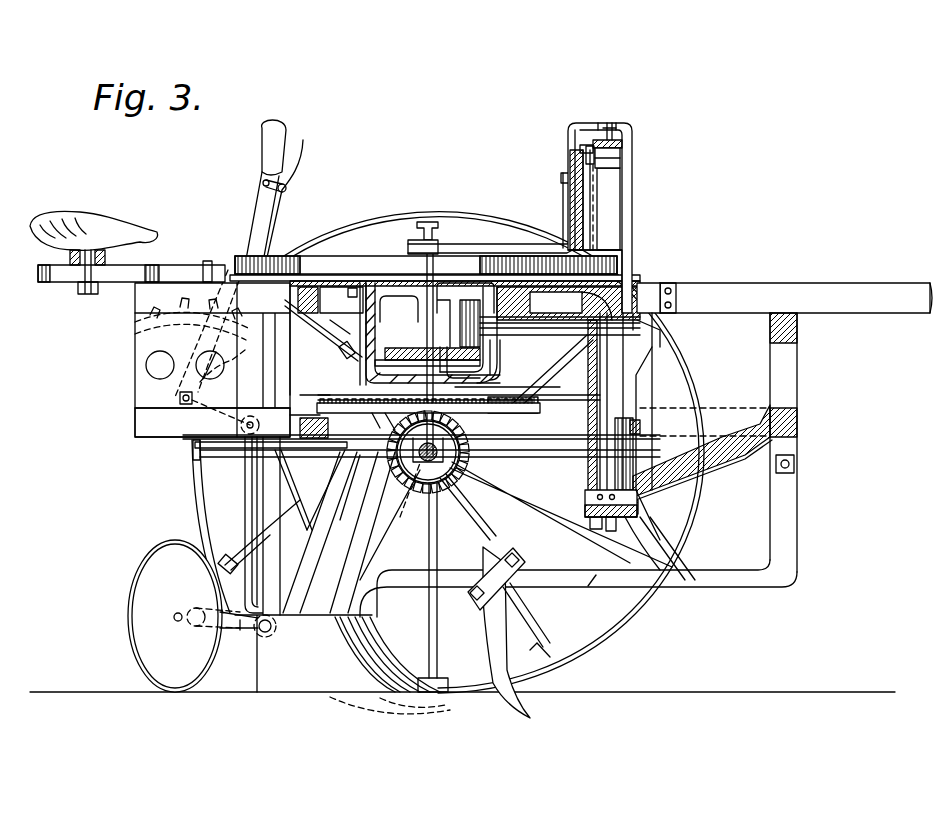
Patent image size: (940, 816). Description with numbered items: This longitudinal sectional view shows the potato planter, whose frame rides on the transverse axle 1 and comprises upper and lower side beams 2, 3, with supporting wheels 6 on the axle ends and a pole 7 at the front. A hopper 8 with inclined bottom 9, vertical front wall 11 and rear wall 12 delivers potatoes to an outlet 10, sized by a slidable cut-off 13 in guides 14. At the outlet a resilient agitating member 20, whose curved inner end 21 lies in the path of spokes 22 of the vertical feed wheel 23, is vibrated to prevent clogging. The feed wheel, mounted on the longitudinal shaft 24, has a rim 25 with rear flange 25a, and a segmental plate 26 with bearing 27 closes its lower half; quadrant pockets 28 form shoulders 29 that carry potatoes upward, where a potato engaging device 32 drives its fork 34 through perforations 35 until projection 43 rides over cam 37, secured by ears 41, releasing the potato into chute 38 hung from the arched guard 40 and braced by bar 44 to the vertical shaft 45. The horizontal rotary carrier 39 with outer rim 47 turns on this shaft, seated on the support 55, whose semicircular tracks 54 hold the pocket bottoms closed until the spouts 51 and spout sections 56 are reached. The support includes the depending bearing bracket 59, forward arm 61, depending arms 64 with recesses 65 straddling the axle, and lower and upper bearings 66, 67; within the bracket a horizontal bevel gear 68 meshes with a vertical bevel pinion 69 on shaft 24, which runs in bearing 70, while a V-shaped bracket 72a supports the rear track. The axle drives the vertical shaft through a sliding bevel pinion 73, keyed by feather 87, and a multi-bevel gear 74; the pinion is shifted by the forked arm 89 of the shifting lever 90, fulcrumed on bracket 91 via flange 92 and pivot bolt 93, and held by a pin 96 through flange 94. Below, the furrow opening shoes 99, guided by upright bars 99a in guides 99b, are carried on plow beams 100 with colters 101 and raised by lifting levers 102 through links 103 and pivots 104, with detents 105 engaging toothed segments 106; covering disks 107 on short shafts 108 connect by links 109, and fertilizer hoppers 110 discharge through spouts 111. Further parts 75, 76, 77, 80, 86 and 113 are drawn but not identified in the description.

The transverse shaft or axle 1 is at (410, 498).
The upper horizontal side beams 2 is at (212, 360).
The lower horizontal side beams 3 is at (212, 422).
The traction or supporting wheels 6 is at (588, 636).
The pole or tongue 7 is at (481, 262).
The hopper 8 is at (686, 406).
The hopper bottom 9 is at (705, 482).
The outlet 10 is at (662, 503).
The front wall 11 is at (797, 380).
The rear wall 12 is at (638, 395).
The slidable cut-off 13 is at (634, 457).
The horizontal guides or ways 14 is at (641, 427).
The resilient seed agitating member 20 is at (633, 425).
The inner end of agitating member 21 is at (588, 480).
The spokes 22 is at (632, 250).
The vertical rotary feed wheel 23 is at (624, 152).
The longitudinal shaft 24 is at (568, 303).
The rim 25 is at (652, 527).
The outer or rear annular flange 25a is at (592, 145).
The segmental plate or wall 26 is at (587, 500).
The bearing 27 is at (553, 371).
The quadrant-shaped pockets 28 is at (621, 166).
The supporting shoulders 29 is at (604, 540).
The potato engaging device 32 is at (632, 128).
The curved fork 34 is at (676, 590).
The perforations 35 is at (642, 386).
The cam 37 is at (570, 157).
The chute 38 is at (608, 190).
The horizontal rotary carrier 39 is at (373, 260).
The arched guard or support 40 is at (609, 122).
The ears 41 is at (562, 186).
The projecting portions 43 is at (575, 128).
The horizontal bar 44 is at (488, 244).
The vertical shaft 45 is at (434, 300).
The outer rim 47 is at (435, 271).
The seed spouts 51 is at (380, 530).
The semicircular tracks 54 is at (244, 262).
The support 55 is at (393, 290).
The vertical spout sections 56 is at (328, 339).
The central depending bearing bracket 59 is at (365, 380).
The central forwardly extending arm 61 is at (545, 275).
The depending arms 64 is at (433, 333).
The bearing recesses 65 is at (455, 455).
The central bearing 66 is at (485, 397).
The upper central bearing 67 is at (452, 290).
The horizontal bevel gear 68 is at (365, 360).
The vertical bevel pinion 69 is at (507, 374).
The bearing 70 is at (495, 345).
The V-shaped supporting bracket 72a is at (325, 338).
The slidable vertical bevel pinion 73 is at (468, 498).
The horizontal multi-bevel gear 74 is at (428, 420).
The pawl 75 is at (348, 397).
The pinion 76 is at (379, 425).
The hopper bracket 77 is at (652, 358).
The guide bar 80 is at (421, 457).
The standard 86 is at (445, 505).
The key or feather 87 is at (428, 452).
The forked arm 89 is at (345, 457).
The shifting lever 90 is at (230, 443).
The bracket 91 is at (318, 416).
The forwardly projecting flange 92 is at (327, 443).
The pivot bolt 93 is at (327, 426).
The rearwardly extending flange 94 is at (248, 500).
The pin 96 is at (258, 426).
The furrow opening shoes 99 is at (342, 664).
The upright bars 99a is at (266, 527).
The guides 99b is at (318, 330).
The plow beams 100 is at (748, 588).
The colters 101 is at (490, 638).
The lifting levers 102 is at (243, 224).
The links or rods 103 is at (250, 540).
The short transverse rods or pivots 104 is at (277, 628).
The dogs or detents 105 is at (225, 347).
The toothed segments 106 is at (135, 321).
The covering disks 107 is at (175, 616).
The short shaft 108 is at (178, 622).
The links or bars 109 is at (242, 636).
The fertilizer hoppers 110 is at (308, 490).
The depending tubular spouts 111 is at (320, 532).
The brace 113 is at (362, 532).